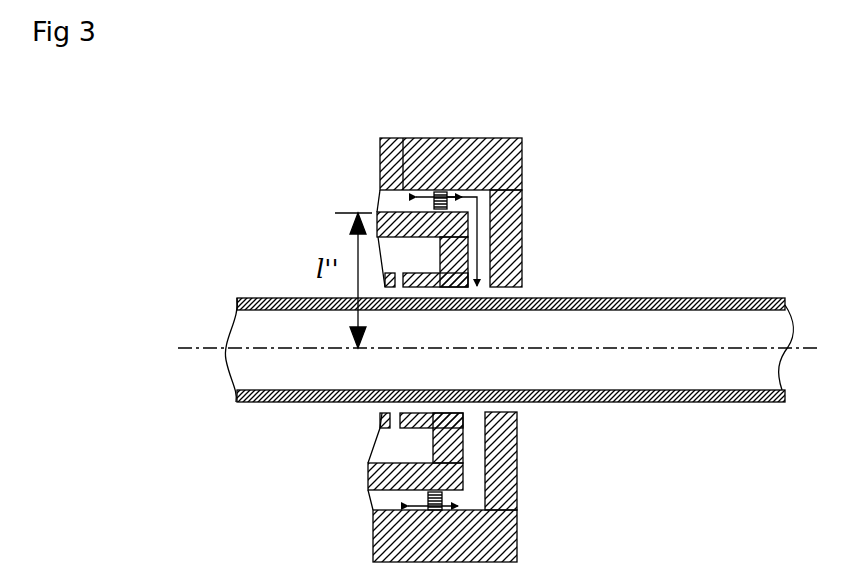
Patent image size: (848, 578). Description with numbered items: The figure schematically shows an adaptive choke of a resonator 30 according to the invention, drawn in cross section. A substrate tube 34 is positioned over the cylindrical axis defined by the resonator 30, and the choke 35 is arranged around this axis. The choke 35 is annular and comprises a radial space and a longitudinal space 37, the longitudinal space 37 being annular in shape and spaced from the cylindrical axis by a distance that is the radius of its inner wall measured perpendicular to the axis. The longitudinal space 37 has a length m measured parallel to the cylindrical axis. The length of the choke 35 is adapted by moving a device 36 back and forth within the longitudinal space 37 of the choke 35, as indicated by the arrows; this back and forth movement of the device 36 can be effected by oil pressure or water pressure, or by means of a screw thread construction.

The resonator 30 is at (452, 122).
The substrate tube 34 is at (720, 402).
The choke 35 is at (487, 260).
The device 36 is at (470, 144).
The longitudinal space 37 is at (403, 138).
The length of the longitudinal space m is at (455, 201).